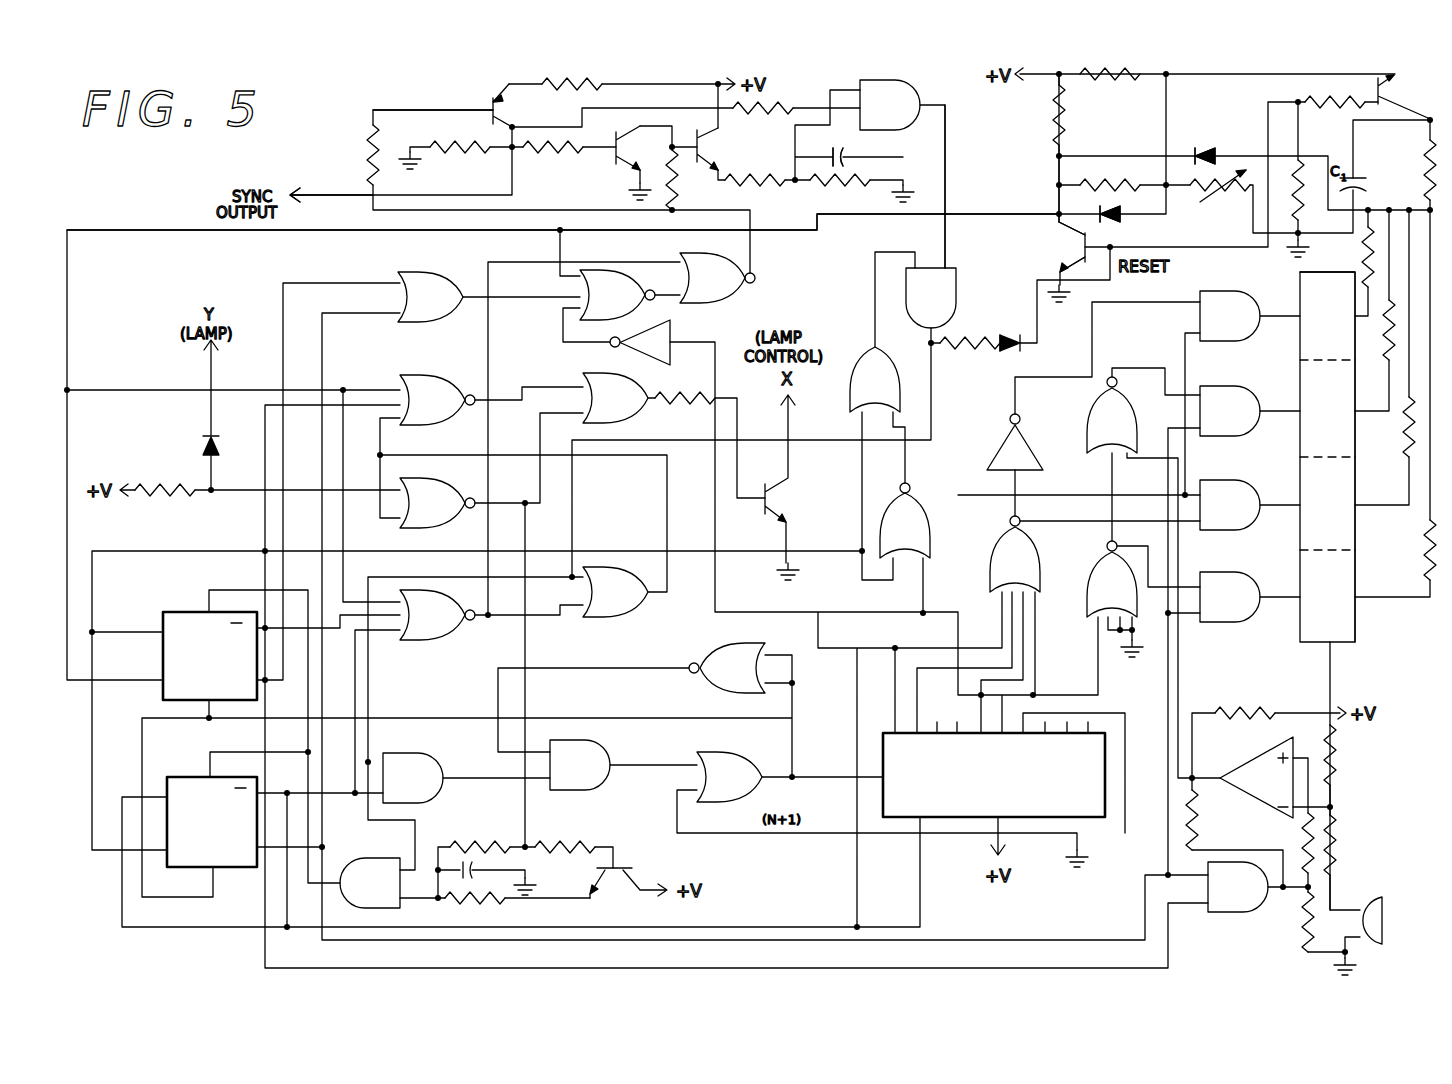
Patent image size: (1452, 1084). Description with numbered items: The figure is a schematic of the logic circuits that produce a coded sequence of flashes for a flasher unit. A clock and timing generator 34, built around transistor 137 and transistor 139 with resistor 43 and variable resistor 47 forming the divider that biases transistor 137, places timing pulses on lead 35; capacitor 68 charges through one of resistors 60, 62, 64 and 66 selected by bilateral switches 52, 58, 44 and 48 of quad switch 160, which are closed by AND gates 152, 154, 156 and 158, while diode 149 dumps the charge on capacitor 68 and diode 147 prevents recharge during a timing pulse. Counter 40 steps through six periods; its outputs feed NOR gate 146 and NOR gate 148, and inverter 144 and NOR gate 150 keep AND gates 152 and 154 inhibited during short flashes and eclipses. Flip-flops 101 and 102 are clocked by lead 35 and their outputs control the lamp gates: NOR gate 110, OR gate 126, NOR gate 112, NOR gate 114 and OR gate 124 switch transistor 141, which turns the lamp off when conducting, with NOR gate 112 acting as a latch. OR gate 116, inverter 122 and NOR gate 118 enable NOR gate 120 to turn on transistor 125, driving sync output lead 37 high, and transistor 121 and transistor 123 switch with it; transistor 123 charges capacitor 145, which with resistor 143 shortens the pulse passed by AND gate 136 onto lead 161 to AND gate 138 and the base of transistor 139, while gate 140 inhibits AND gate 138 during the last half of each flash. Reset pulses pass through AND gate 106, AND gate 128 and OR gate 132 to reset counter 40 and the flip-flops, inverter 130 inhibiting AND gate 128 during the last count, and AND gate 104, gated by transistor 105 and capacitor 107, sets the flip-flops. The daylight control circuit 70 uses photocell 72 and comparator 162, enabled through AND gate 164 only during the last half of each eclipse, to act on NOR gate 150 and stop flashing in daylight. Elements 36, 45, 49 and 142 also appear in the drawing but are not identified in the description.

The clock and timing generator 34 is at (1027, 150).
The timing pulse lead 35 is at (67, 280).
The oscillator circuit 36 is at (424, 101).
The sync output lead 37 is at (346, 194).
The counter 40 is at (1005, 793).
The resistor 43 is at (1122, 84).
The bilateral switch 44 is at (1335, 503).
The resistor 45 is at (1106, 180).
The variable resistor 47 is at (1226, 196).
The bilateral switch 48 is at (1335, 596).
The resistor 49 is at (1048, 112).
The bilateral switch 52 is at (1327, 316).
The bilateral switch 58 is at (1335, 408).
The resistor 60 is at (1402, 425).
The resistor 62 is at (1411, 540).
The resistor 64 is at (1368, 258).
The resistor 66 is at (1383, 342).
The capacitor 68 is at (1360, 172).
The daylight control circuit 70 is at (1370, 800).
The photocell 72 is at (1376, 900).
The flip-flop 101 is at (220, 666).
The flip-flop 102 is at (223, 831).
The AND gate 104 is at (385, 895).
The transistor 105 is at (616, 878).
The AND gate 106 is at (427, 790).
The capacitor 107 is at (462, 891).
The NOR gate 110 is at (442, 626).
The NOR gate 112 is at (442, 515).
The NOR gate 114 is at (442, 411).
The OR gate 116 is at (441, 308).
The NOR gate 118 is at (625, 306).
The NOR gate 120 is at (723, 290).
The transistor 121 is at (610, 164).
The inverter 122 is at (672, 328).
The transistor 123 is at (705, 150).
The OR gate 124 is at (627, 409).
The transistor 125 is at (500, 110).
The OR gate 126 is at (627, 603).
The AND gate 128 is at (593, 776).
The inverter 130 is at (747, 679).
The OR gate 132 is at (743, 789).
The AND gate 136 is at (903, 117).
The transistor 137 is at (1364, 83).
The AND gate 138 is at (945, 309).
The transistor 139 is at (1072, 244).
The gate 140 is at (891, 392).
The transistor 141 is at (758, 510).
The NOR gate 142 is at (920, 539).
The resistor 143 is at (814, 195).
The inverter 144 is at (999, 444).
The capacitor 145 is at (840, 154).
The quad NOR gate 146 is at (1030, 572).
The diode 147 is at (1201, 146).
The quad NOR gate 148 is at (1126, 598).
The diode 149 is at (1116, 226).
The NOR gate 150 is at (1126, 433).
The AND gate 152 is at (1244, 328).
The AND gate 154 is at (1244, 423).
The AND gate 156 is at (1244, 517).
The AND gate 158 is at (1244, 609).
The quad switch 160 is at (1302, 627).
The lead 161 is at (944, 171).
The comparator 162 is at (1250, 756).
The AND gate 164 is at (1253, 899).